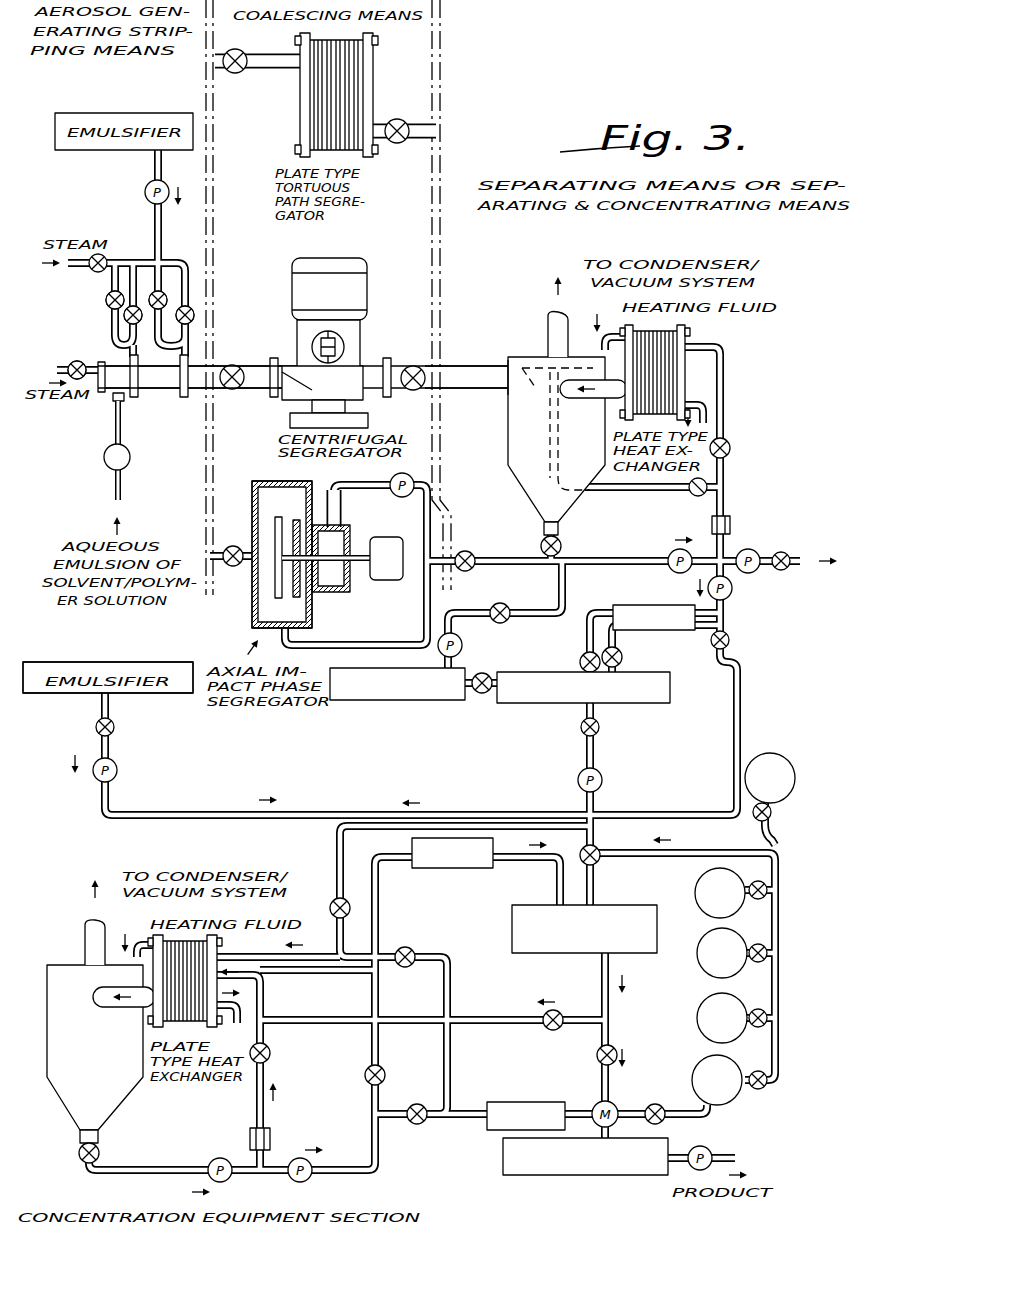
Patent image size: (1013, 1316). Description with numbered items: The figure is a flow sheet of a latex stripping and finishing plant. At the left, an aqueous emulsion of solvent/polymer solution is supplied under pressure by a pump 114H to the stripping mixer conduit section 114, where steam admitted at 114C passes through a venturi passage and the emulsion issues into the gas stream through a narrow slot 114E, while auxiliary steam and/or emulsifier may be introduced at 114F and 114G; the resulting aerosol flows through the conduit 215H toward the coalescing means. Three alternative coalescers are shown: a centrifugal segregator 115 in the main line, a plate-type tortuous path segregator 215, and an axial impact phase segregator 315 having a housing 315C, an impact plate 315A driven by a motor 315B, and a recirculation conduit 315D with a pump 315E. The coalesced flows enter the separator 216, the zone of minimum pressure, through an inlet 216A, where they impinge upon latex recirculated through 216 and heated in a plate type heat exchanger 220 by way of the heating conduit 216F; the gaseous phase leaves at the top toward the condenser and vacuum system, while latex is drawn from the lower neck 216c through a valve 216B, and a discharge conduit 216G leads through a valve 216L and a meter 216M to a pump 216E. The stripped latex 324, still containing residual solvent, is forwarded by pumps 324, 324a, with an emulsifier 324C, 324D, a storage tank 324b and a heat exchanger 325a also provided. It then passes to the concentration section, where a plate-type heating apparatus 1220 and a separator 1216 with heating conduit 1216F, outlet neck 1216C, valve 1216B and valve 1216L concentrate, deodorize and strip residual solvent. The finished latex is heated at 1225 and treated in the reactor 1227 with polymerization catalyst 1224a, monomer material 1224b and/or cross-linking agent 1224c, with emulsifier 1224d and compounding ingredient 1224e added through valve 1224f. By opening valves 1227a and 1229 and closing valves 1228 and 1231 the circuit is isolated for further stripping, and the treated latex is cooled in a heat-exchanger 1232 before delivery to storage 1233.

The plate-type tortuous path segregator 215 is at (300, 113).
The centrifugal segregator 115 is at (292, 295).
The conduit section 114 is at (105, 390).
The steam admission 114C is at (100, 365).
The auxiliary steam and/or emulsifier inlet 114F is at (130, 352).
The auxiliary steam and/or emulsifier inlet 114G is at (178, 395).
The narrow slot 114E is at (122, 433).
The pump 114H is at (108, 470).
The conduit to separating vessel 215H is at (460, 372).
The separator 216 is at (528, 497).
The vessel inlet 216A is at (508, 408).
The heating fluid conduit in vessel 216F is at (570, 393).
The discharge conduit 216G is at (630, 491).
The pump 216E is at (668, 555).
The vessel outlet neck 216c is at (543, 528).
The outlet valve 216B is at (541, 546).
The flow meter 216M is at (732, 524).
The valve 216L is at (730, 413).
The plate type heat exchanger 220 is at (724, 377).
The axial impact phase segregator 315 is at (258, 481).
The impact plate 315A is at (275, 578).
The motor 315B is at (390, 582).
The segregator housing 315C is at (250, 622).
The recirculation conduit 315D is at (345, 630).
The recirculation pump 315E is at (380, 497).
The stripped latex 324 is at (757, 552).
The pump 324a is at (733, 603).
The storage tank 324b is at (552, 704).
The emulsifier 324C is at (403, 702).
The emulsifier 324D is at (168, 700).
The heat exchanger 325a is at (638, 596).
The compounding ingredient supply 1224e is at (795, 742).
The polymerization catalyst 1224a is at (738, 850).
The monomer material 1224b is at (705, 938).
The cross-linking agent 1224c is at (698, 1024).
The emulsifier supply 1224d is at (704, 1060).
The valve 1224f is at (650, 1108).
The heater 1225 is at (455, 868).
The polymerization reactor 1227 is at (547, 953).
The valve 1227a is at (410, 950).
The valve 1228 is at (330, 908).
The valve 1229 is at (367, 1082).
The valve 1231 is at (418, 1124).
The heat-exchanger 1232 is at (528, 1102).
The storage 1233 is at (578, 1176).
The separator 1216 is at (113, 1097).
The heating fluid conduit 1216F is at (110, 1008).
The heating apparatus 1220 is at (262, 982).
The valve 1216L is at (300, 1050).
The vessel outlet neck 1216C is at (100, 1138).
The outlet valve 1216B is at (82, 1160).